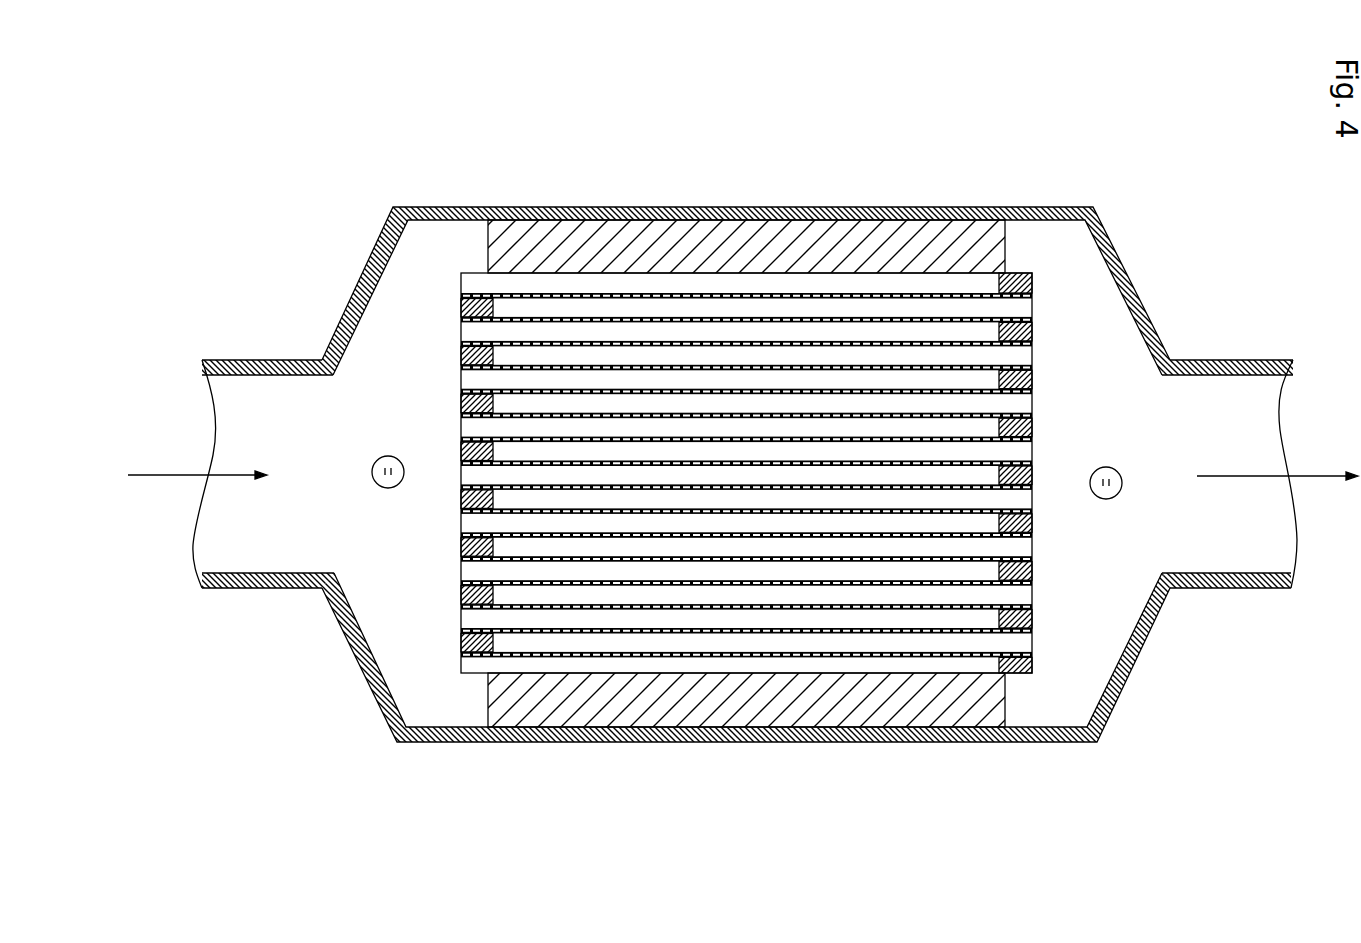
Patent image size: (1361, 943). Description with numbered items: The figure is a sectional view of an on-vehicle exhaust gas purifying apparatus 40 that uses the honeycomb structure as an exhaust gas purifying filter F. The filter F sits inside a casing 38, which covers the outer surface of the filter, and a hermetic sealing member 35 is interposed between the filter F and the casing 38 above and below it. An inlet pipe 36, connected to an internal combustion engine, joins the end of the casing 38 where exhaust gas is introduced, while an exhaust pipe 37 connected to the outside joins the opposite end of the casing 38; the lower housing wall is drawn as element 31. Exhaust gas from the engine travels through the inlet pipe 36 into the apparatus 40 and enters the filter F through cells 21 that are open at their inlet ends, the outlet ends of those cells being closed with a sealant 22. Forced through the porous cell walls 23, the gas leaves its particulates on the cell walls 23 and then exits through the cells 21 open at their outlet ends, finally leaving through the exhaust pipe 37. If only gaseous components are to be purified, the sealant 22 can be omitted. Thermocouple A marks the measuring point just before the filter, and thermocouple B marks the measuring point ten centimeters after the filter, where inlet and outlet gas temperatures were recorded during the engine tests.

The cell (gas flow passage) 21 is at (470, 378).
The sealant 22 is at (463, 303).
The cell walls 23 is at (702, 300).
The casing (shell) 31 is at (1025, 745).
The hermetic sealing member 35 is at (573, 246).
The inlet pipe 36 is at (238, 400).
The exhaust pipe 37 is at (1230, 420).
The casing 38 is at (786, 210).
The exhaust gas purifying apparatus 40 is at (872, 162).
The exhaust gas purifying filter F is at (1048, 325).
The thermocouple / measuring point A is at (370, 472).
The thermocouple / measuring point B is at (1123, 481).